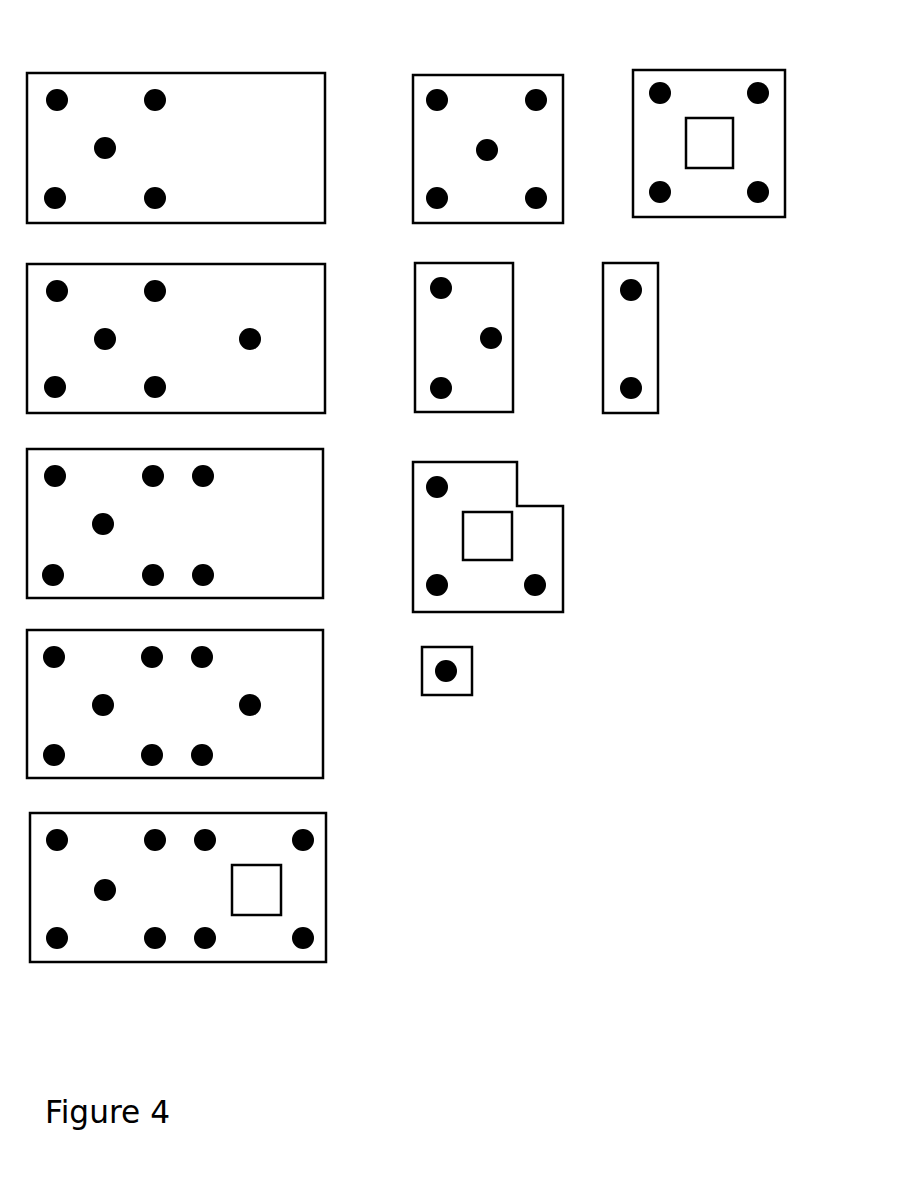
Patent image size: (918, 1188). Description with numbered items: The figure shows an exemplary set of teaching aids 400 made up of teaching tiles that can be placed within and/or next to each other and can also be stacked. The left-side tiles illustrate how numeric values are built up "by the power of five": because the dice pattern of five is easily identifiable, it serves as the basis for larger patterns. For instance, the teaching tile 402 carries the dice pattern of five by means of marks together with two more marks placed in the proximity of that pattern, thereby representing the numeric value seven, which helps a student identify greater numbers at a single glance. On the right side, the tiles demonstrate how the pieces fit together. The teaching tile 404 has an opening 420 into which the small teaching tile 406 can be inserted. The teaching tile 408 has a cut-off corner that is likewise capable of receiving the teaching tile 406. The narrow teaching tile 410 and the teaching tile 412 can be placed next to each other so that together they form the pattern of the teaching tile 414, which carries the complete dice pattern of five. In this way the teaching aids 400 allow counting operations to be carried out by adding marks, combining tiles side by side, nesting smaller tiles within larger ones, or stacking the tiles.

The teaching aids 400 is at (89, 61).
The teaching tile 402 is at (212, 516).
The teaching tile 404 is at (231, 956).
The teaching tile 406 is at (517, 704).
The teaching tile 408 is at (570, 556).
The teaching tile 410 is at (700, 359).
The teaching tile 412 is at (541, 381).
The teaching tile 414 is at (564, 167).
The opening 420 is at (323, 864).